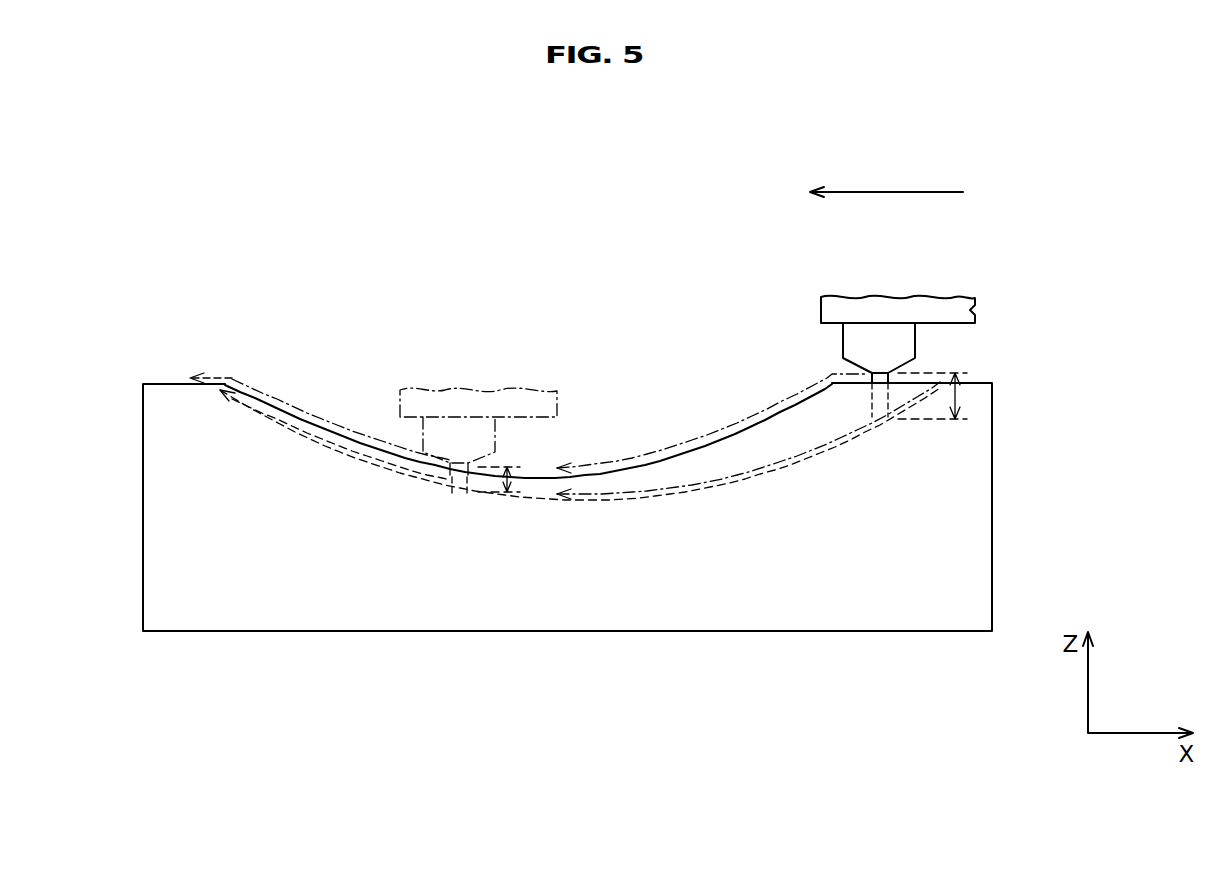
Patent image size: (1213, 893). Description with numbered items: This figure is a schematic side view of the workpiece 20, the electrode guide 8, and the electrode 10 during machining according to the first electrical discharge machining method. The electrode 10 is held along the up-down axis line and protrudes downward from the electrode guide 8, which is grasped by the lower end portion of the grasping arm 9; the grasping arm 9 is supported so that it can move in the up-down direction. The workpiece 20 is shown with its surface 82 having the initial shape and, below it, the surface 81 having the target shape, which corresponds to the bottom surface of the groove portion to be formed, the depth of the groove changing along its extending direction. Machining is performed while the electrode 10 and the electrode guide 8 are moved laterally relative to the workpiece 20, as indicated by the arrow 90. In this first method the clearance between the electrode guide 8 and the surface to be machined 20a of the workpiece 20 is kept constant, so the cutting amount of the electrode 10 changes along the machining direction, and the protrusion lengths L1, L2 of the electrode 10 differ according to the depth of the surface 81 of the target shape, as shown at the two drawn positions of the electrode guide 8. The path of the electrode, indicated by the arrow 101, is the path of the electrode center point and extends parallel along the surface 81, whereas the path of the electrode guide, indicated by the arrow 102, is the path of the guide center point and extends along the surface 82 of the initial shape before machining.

The electrode guide 8 is at (438, 425).
The grasping arm 9 is at (540, 390).
The electrode 10 is at (460, 470).
The workpiece 20 is at (182, 606).
The surface to be machined 20a is at (700, 447).
The surface having the target shape 81 is at (408, 483).
The surface having the initial shape 82 is at (658, 462).
The arrow indicating machining direction 90 is at (897, 192).
The path of the electrode 101 is at (308, 440).
The path of the electrode guide 102 is at (265, 402).
The protrusion length L1 is at (960, 396).
The protrusion length L2 is at (514, 478).